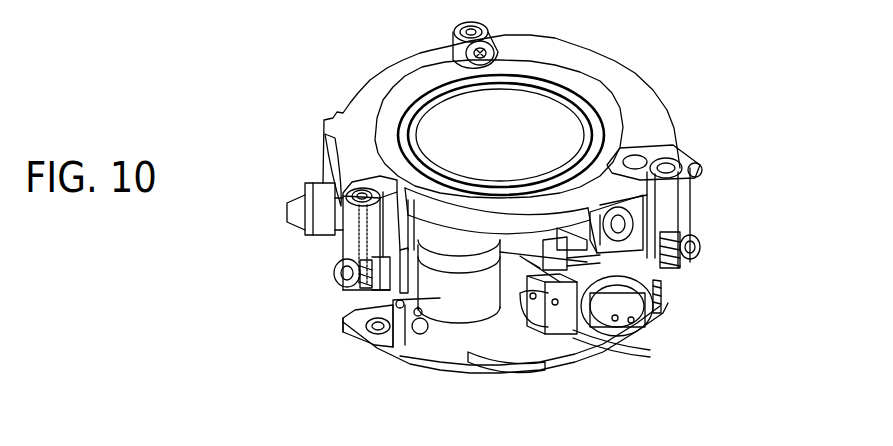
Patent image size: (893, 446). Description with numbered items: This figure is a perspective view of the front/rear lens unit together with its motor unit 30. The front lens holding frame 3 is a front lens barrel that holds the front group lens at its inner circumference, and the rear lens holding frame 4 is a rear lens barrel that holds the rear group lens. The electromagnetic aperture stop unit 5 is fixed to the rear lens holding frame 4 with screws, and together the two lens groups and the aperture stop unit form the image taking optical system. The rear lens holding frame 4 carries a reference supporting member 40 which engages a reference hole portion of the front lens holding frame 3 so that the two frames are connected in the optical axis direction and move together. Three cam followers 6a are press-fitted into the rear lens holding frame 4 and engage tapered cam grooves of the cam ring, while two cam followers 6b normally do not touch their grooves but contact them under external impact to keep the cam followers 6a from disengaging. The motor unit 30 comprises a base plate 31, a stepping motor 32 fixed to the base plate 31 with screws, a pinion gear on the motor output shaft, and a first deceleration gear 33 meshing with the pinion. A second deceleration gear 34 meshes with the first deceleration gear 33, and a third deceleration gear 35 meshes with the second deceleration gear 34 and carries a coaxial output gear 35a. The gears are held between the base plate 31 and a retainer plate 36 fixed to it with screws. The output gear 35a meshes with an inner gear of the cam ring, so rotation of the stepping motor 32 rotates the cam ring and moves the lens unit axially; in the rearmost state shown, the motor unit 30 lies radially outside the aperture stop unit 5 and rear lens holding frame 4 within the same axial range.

The front lens holding frame 3 is at (660, 100).
The rear lens holding frame 4 is at (335, 237).
The electromagnetic aperture stop unit 5 is at (548, 340).
The cam followers 6a is at (336, 280).
The cam followers 6b is at (290, 212).
The motor unit 30 is at (455, 368).
The base plate 31 is at (387, 348).
The stepping motor 32 is at (448, 297).
The first deceleration gear 33 is at (513, 370).
The second deceleration gear 34 is at (576, 345).
The third deceleration gear 35 is at (647, 330).
The output gear 35a is at (665, 310).
The retainer plate 36 is at (613, 353).
The reference supporting member 40 is at (700, 212).